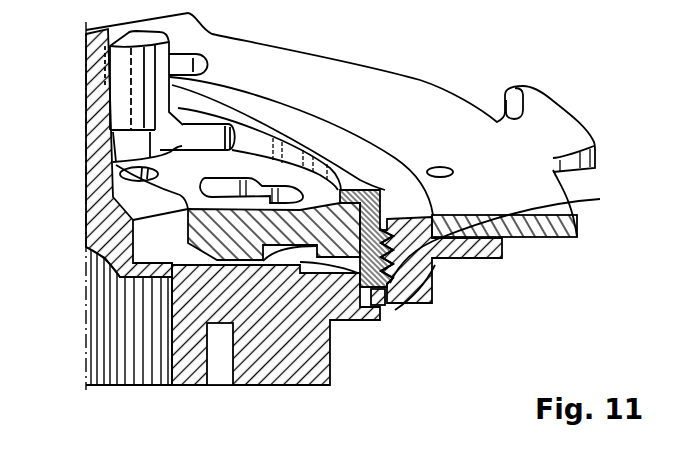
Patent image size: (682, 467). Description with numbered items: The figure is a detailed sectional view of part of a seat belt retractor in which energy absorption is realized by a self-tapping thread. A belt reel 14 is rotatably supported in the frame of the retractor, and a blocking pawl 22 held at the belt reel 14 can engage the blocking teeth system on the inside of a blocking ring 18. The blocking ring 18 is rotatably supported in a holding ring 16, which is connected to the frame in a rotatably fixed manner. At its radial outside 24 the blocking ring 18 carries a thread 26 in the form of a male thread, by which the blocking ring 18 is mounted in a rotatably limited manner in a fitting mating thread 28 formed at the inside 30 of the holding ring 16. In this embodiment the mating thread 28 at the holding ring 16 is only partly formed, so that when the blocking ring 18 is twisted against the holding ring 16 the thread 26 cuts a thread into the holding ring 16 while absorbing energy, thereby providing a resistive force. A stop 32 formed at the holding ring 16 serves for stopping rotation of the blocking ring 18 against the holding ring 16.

The belt reel 14 is at (113, 337).
The holding ring 16 is at (490, 259).
The blocking ring 18 is at (271, 104).
The blocking pawl 22 is at (173, 189).
The radial outside 24 is at (387, 220).
The thread 26 is at (393, 305).
The mating thread 28 is at (507, 248).
The inside 30 is at (435, 283).
The stop 32 is at (372, 306).